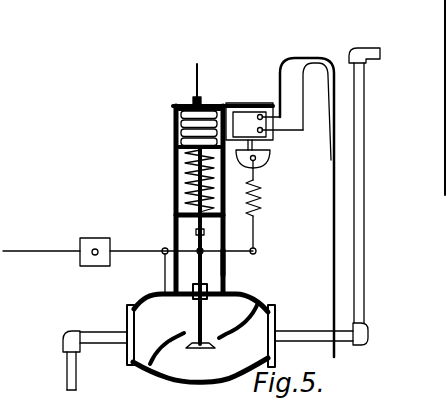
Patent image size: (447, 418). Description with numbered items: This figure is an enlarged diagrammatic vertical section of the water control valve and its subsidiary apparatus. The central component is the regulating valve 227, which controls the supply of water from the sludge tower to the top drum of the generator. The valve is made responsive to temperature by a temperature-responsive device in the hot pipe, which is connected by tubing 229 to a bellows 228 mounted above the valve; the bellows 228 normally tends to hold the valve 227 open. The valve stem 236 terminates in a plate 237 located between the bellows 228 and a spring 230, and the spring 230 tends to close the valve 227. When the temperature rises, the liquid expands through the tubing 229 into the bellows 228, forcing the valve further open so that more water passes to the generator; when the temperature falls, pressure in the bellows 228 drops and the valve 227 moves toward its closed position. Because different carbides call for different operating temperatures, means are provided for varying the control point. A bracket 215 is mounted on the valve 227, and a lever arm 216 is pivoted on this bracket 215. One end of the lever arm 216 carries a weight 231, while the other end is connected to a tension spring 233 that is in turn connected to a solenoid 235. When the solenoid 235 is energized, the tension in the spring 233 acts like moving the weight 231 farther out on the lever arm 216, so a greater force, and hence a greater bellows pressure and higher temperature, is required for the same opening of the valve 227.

The bracket 215 is at (163, 276).
The lever arm 216 is at (214, 252).
The regulating valve 227 is at (197, 349).
The bellows 228 is at (180, 129).
The tubing 229 is at (195, 77).
The spring 230 is at (180, 191).
The weight 231 is at (95, 237).
The tension spring 233 is at (268, 190).
The solenoid 235 is at (250, 106).
The valve stem 236 is at (198, 232).
The plate 237 is at (180, 156).